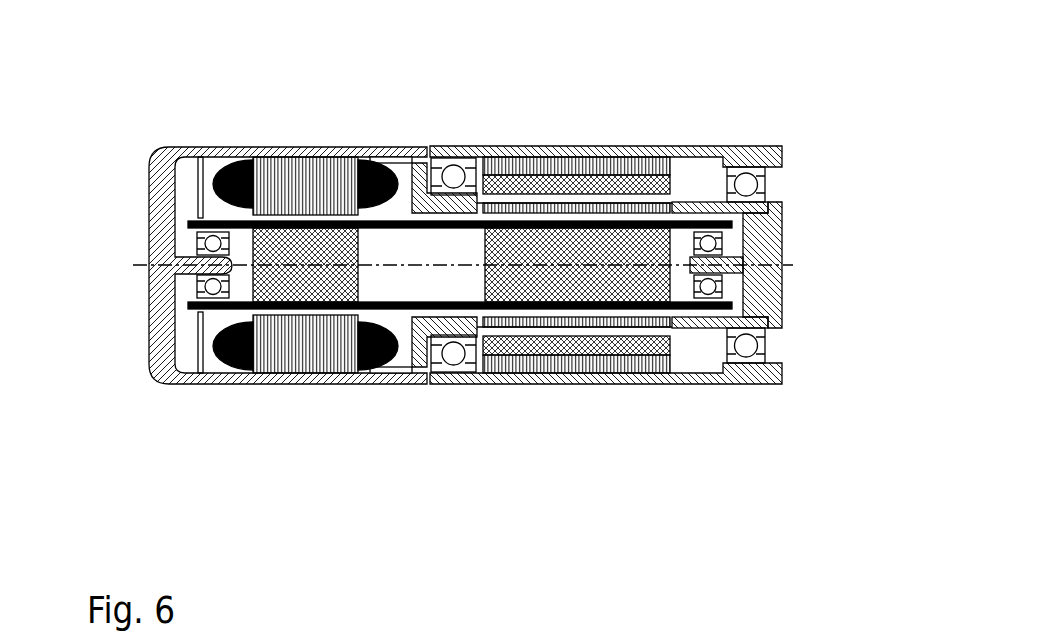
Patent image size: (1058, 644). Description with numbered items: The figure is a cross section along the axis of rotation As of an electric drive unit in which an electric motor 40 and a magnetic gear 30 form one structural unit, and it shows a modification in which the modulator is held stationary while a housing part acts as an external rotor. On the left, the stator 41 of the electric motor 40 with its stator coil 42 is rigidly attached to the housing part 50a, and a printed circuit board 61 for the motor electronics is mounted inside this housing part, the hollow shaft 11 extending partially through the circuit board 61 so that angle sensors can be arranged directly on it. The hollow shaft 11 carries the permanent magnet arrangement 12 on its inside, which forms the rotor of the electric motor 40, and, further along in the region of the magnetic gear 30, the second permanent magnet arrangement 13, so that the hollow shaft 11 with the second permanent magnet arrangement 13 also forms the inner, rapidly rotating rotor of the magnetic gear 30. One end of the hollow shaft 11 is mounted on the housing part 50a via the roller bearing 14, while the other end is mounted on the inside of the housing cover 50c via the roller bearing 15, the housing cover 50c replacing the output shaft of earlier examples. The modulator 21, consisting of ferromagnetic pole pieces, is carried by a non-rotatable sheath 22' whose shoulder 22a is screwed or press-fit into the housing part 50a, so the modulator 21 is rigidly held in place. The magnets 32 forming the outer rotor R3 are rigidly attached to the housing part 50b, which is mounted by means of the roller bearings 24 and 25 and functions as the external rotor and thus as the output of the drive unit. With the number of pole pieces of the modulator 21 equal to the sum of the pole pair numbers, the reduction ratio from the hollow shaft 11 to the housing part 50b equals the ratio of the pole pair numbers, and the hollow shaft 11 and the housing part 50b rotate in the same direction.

The hollow shaft 11 is at (397, 310).
The permanent magnet arrangement 12 is at (352, 282).
The second permanent magnet arrangement 13 is at (485, 243).
The roller bearing 14 is at (210, 243).
The roller bearing 15 is at (712, 243).
The modulator 21 is at (667, 332).
The shoulder 22a is at (393, 170).
The sheath 22' is at (734, 215).
The roller bearing 24 is at (457, 360).
The roller bearing 25 is at (748, 347).
The magnetic gear 30 is at (654, 260).
The permanent magnets 32 is at (672, 183).
The electric motor 40 is at (269, 245).
The stator 41 is at (267, 148).
The stator coil 42 is at (231, 345).
The housing part 50a is at (172, 150).
The housing part 50b is at (598, 385).
The housing cover 50c is at (773, 242).
The circuit board 61 is at (198, 350).
The outer rotor R3 is at (590, 162).
The axis of rotation As is at (479, 271).